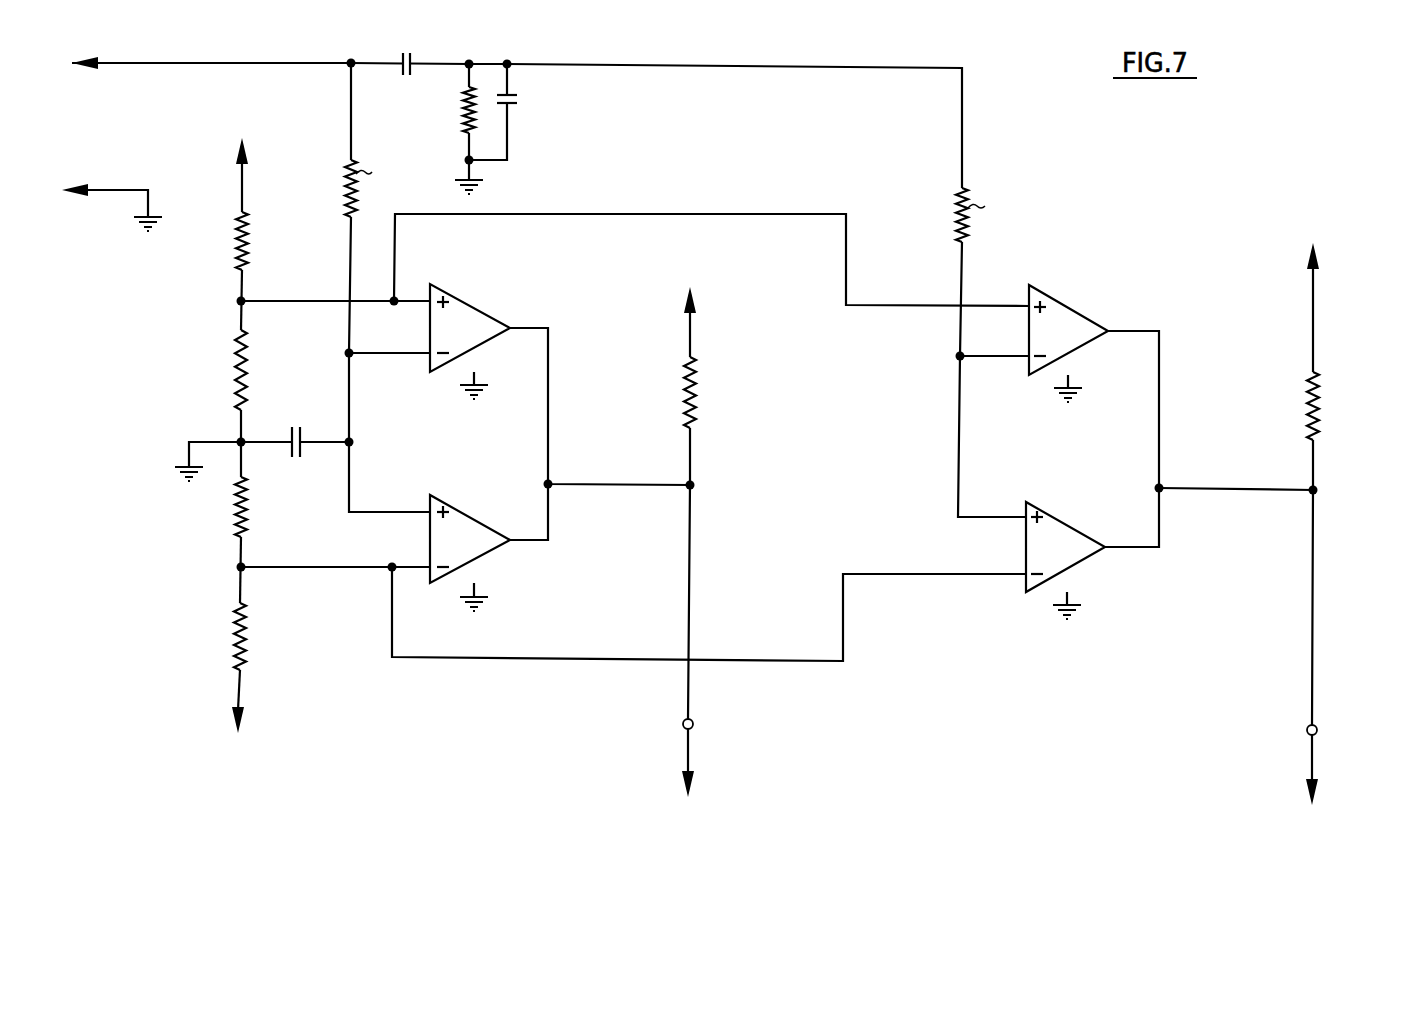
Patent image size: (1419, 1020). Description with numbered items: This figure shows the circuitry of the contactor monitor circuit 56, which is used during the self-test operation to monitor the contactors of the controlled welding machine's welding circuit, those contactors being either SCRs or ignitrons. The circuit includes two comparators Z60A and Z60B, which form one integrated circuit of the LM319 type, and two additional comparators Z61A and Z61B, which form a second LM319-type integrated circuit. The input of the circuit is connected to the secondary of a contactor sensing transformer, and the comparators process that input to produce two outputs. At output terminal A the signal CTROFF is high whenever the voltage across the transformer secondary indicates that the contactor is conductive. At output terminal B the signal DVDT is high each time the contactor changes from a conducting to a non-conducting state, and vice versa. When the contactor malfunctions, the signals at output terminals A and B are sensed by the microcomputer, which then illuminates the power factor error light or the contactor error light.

The contactor monitor circuit 56 is at (724, 481).
The comparator Z60A is at (463, 320).
The comparator Z60B is at (468, 529).
The comparator Z61A is at (1060, 318).
The comparator Z61B is at (1065, 540).
The output terminal A is at (693, 722).
The output terminal B is at (1317, 728).